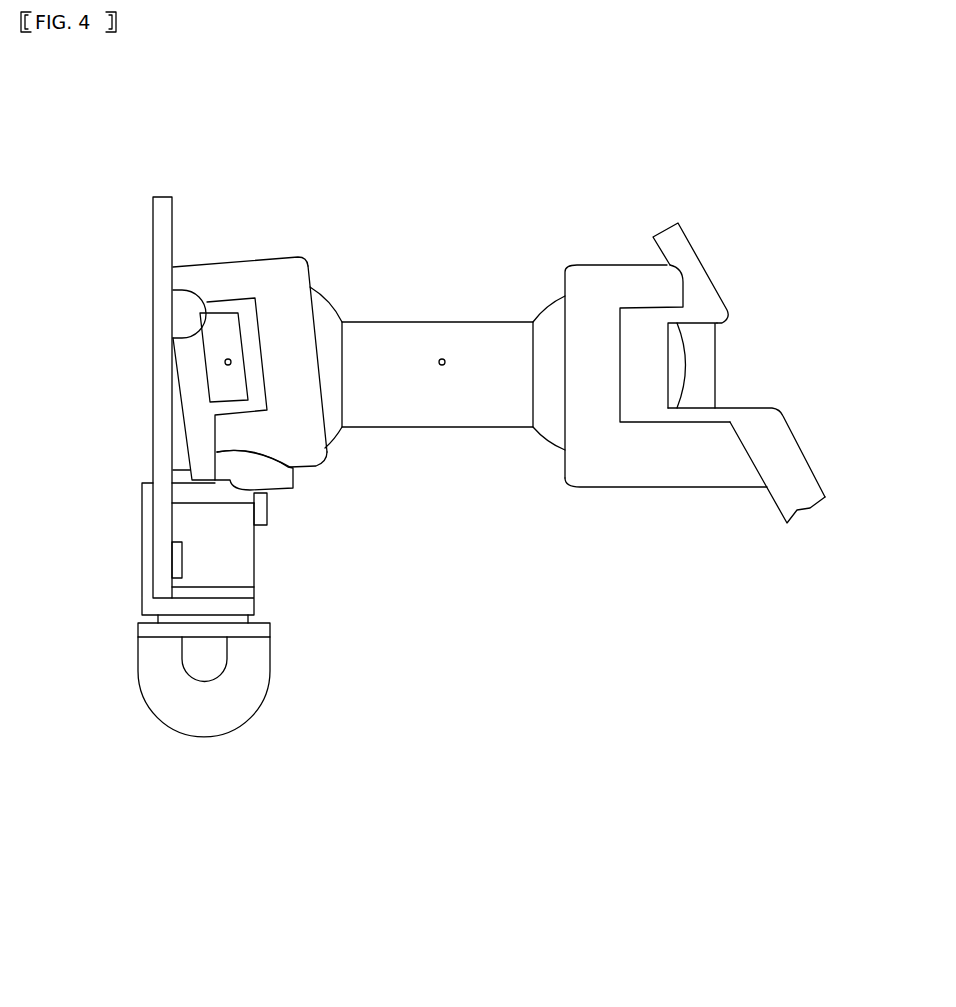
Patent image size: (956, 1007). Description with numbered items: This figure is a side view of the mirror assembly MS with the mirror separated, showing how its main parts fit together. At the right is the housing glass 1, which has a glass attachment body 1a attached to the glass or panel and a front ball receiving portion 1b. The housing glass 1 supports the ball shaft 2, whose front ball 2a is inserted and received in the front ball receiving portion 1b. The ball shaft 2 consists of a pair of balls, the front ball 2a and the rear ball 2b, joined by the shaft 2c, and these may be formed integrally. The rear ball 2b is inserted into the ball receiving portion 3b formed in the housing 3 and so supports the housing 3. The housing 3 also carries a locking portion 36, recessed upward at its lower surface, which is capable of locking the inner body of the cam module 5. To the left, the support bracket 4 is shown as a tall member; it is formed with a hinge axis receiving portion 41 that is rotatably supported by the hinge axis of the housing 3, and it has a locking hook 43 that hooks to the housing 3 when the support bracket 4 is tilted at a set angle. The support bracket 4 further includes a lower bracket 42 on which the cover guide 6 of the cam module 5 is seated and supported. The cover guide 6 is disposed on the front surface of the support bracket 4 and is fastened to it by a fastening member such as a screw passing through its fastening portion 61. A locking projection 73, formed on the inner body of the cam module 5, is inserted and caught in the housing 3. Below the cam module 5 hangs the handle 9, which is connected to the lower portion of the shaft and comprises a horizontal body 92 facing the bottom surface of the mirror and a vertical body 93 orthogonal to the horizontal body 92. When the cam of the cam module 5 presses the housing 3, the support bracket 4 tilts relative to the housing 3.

The manipulator system MS is at (556, 164).
The housing glass 1 is at (826, 231).
The glass attachment body 1a is at (695, 273).
The front ball receiving portion 1b is at (600, 365).
The ball shaft 2 is at (387, 205).
The front ball 2a is at (553, 318).
The rear ball 2b is at (318, 296).
The shaft 2c is at (462, 385).
The housing 3 is at (287, 332).
The ball receiving portion 3b is at (322, 318).
The locking portion 36 is at (205, 460).
The support bracket 4 is at (161, 213).
The hinge axis receiving portion 41 is at (190, 306).
The lower bracket 42 is at (217, 590).
The locking hook 43 is at (228, 470).
The cam module 5 is at (303, 606).
The cover guide 6 is at (193, 521).
The fastening portion 61 is at (177, 561).
The locking projection 73 is at (267, 497).
The handle 9 is at (213, 797).
The horizontal body 92 is at (242, 630).
The vertical body 93 is at (210, 718).